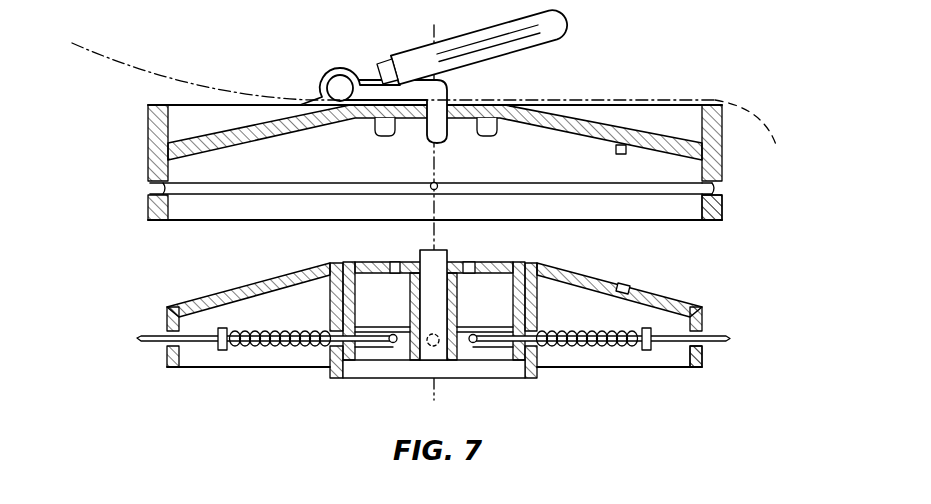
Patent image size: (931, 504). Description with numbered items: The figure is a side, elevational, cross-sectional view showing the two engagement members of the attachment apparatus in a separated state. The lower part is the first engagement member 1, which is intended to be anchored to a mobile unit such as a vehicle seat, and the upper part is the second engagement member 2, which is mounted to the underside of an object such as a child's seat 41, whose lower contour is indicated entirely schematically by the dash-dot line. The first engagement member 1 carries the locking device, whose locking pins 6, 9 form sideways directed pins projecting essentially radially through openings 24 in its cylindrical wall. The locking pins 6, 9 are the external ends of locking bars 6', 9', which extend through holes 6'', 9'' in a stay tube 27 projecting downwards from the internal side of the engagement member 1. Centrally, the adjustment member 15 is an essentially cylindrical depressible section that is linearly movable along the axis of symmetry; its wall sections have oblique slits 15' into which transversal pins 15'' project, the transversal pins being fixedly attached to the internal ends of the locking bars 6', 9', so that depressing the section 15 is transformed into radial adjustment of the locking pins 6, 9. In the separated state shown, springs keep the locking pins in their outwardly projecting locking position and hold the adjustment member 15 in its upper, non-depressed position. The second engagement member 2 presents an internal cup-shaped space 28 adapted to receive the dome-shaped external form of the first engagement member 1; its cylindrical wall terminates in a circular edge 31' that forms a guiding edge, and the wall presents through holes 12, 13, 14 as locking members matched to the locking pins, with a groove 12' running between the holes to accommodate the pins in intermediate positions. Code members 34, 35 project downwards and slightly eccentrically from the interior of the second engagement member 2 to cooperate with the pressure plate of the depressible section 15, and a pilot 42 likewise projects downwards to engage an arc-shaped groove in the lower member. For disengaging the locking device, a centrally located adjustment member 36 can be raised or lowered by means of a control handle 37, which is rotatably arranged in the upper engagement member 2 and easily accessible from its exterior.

The first engagement member 1 is at (432, 333).
The second engagement member 2 is at (429, 133).
The locking pin 6 is at (241, 369).
The locking bar 6' is at (217, 362).
The hole 6'' is at (355, 373).
The locking pin 9 is at (623, 367).
The locking bar 9' is at (613, 362).
The hole 9'' is at (515, 371).
The through hole 12 is at (744, 147).
The groove 12' is at (637, 218).
The through hole 13 is at (440, 185).
The through hole 14 is at (150, 187).
The adjustment member 15 is at (391, 295).
The oblique slit 15' is at (434, 311).
The transversal pin 15'' is at (414, 390).
The opening 24 is at (688, 349).
The stay tube 27 is at (329, 297).
The internal cup-shaped space 28 is at (214, 182).
The edge 31' is at (132, 225).
The code member 34 is at (374, 134).
The code member 35 is at (498, 132).
The adjustment member 36 is at (430, 143).
The control handle 37 is at (556, 34).
The child's seat 41 is at (92, 47).
The pilot 42 is at (615, 150).